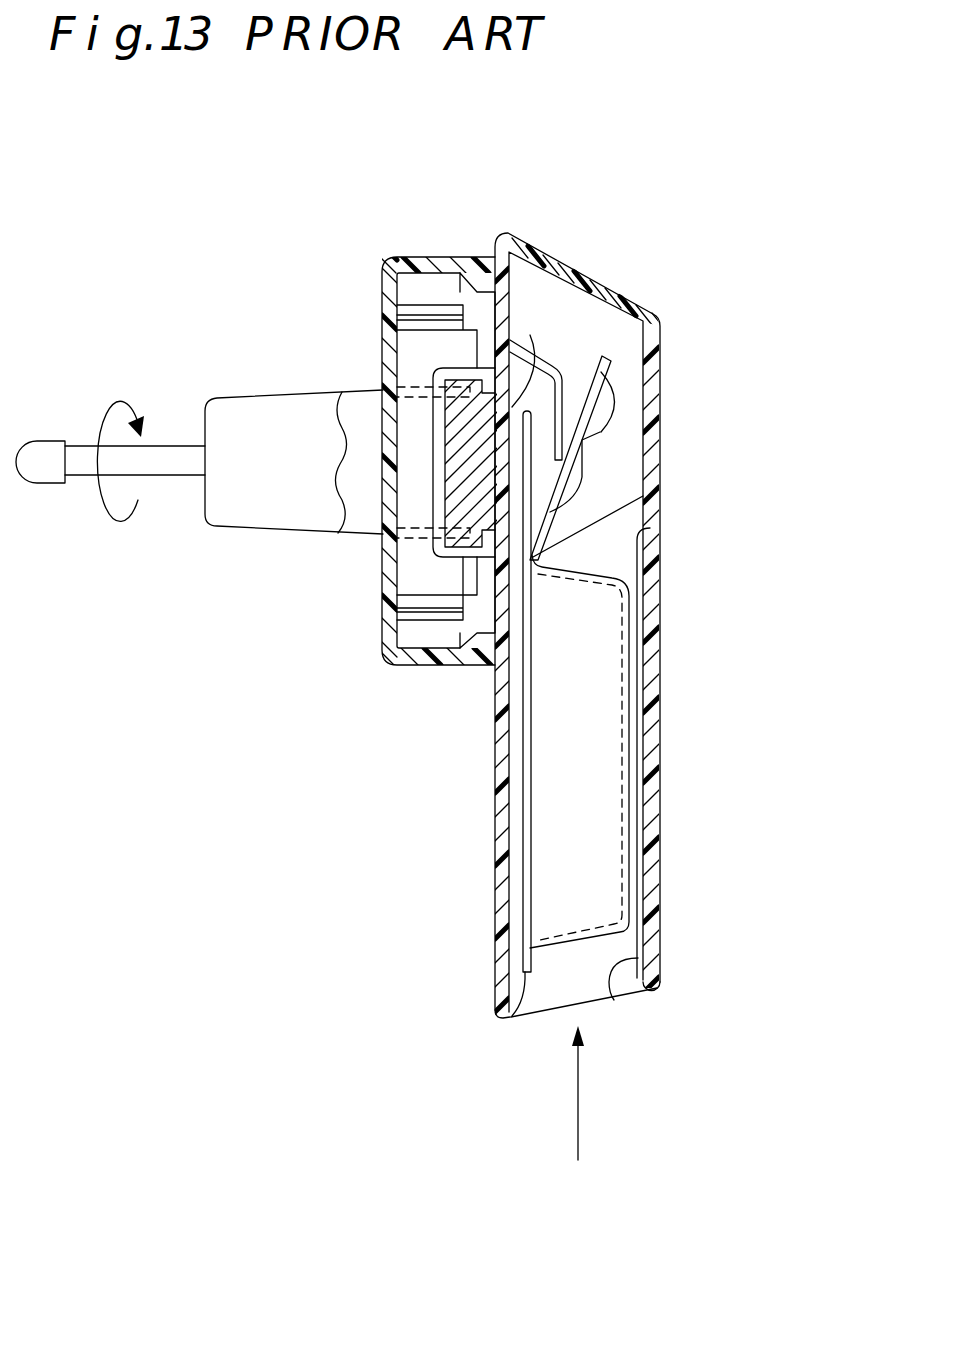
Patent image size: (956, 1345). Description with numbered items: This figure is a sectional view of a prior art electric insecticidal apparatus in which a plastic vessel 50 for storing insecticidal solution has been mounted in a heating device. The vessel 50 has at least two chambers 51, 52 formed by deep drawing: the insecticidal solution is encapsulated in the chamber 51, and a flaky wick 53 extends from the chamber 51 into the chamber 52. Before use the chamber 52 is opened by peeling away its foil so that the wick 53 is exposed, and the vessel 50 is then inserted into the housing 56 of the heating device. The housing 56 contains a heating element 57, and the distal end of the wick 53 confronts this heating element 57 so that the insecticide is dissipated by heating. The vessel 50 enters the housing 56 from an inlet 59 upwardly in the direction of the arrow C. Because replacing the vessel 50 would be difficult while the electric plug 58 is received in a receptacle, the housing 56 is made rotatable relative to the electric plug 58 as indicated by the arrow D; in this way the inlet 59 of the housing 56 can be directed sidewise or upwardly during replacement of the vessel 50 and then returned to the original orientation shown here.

The vessel 50 is at (567, 561).
The chamber 51 is at (632, 777).
The chamber 52 is at (616, 433).
The wick 53 is at (533, 485).
The housing 56 is at (658, 658).
The heating element 57 is at (514, 341).
The electric plug 58 is at (280, 395).
The inlet 59 is at (614, 1000).
The arrow C is at (578, 1122).
The arrow D is at (129, 483).